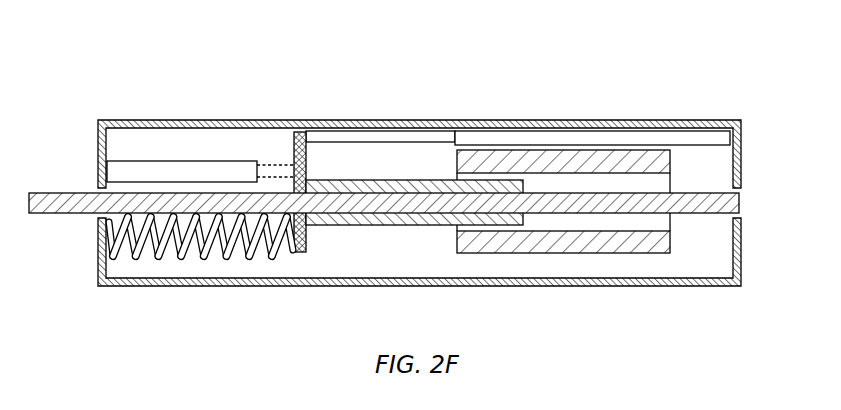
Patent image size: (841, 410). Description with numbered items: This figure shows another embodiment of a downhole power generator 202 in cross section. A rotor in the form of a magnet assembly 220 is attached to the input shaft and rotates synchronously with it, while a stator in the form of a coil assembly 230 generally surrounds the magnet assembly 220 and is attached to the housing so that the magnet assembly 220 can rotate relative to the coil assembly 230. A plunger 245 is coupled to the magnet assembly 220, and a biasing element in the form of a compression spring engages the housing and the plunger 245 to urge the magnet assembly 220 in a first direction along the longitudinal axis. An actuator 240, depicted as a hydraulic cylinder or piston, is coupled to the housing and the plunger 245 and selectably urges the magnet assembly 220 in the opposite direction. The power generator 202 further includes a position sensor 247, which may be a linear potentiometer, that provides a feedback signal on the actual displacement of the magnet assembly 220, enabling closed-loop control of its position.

The power generator 202 is at (371, 83).
The magnet assembly 220 is at (413, 217).
The coil assembly 230 is at (517, 238).
The actuator 240 is at (589, 137).
The plunger 245 is at (295, 153).
The position sensor 247 is at (228, 172).